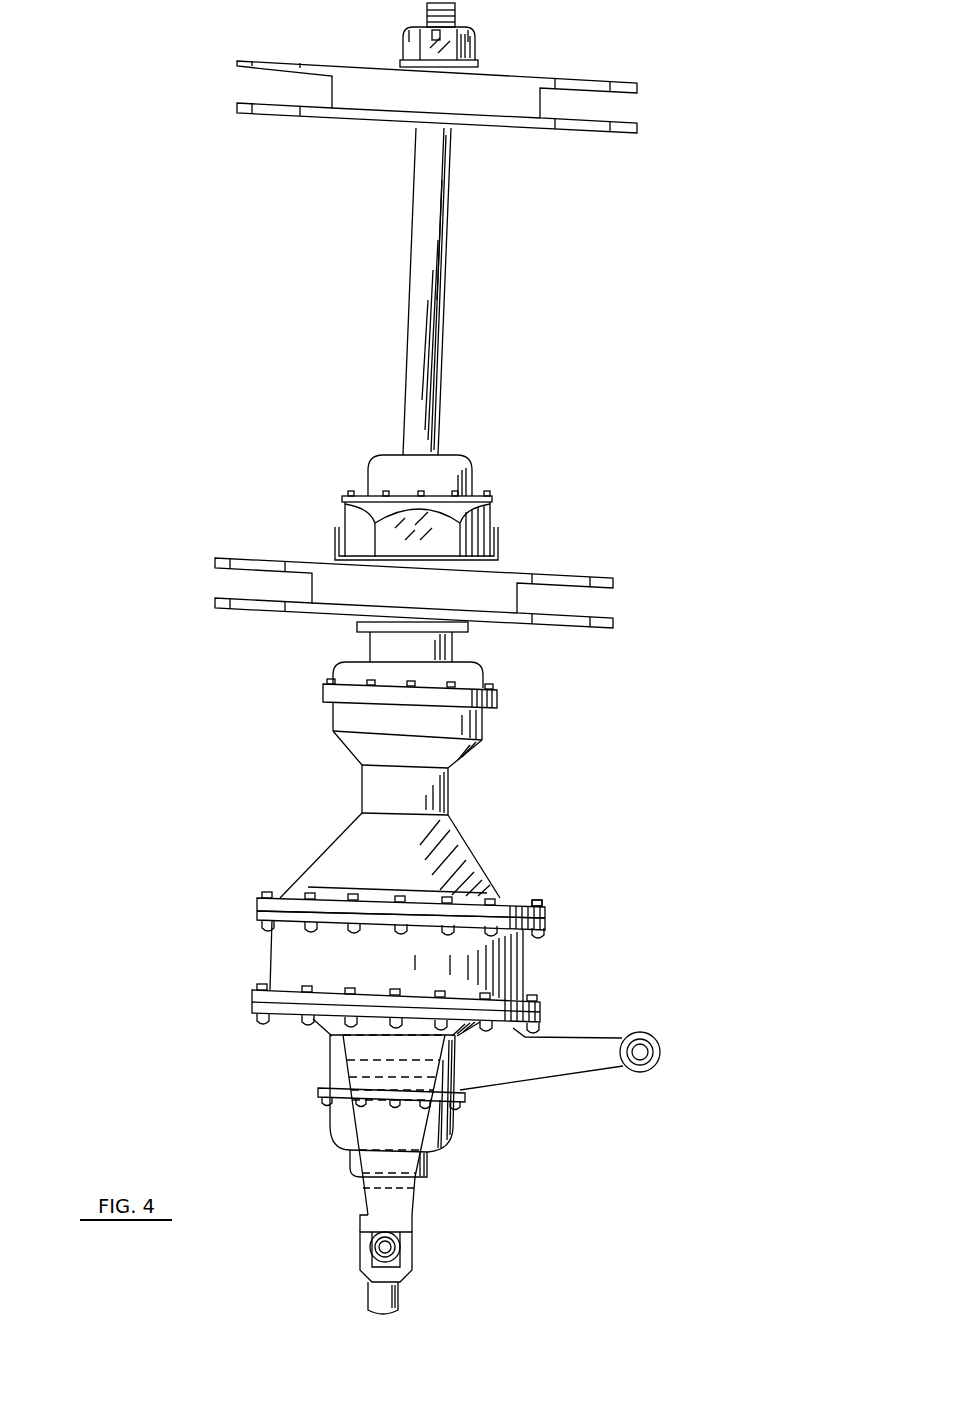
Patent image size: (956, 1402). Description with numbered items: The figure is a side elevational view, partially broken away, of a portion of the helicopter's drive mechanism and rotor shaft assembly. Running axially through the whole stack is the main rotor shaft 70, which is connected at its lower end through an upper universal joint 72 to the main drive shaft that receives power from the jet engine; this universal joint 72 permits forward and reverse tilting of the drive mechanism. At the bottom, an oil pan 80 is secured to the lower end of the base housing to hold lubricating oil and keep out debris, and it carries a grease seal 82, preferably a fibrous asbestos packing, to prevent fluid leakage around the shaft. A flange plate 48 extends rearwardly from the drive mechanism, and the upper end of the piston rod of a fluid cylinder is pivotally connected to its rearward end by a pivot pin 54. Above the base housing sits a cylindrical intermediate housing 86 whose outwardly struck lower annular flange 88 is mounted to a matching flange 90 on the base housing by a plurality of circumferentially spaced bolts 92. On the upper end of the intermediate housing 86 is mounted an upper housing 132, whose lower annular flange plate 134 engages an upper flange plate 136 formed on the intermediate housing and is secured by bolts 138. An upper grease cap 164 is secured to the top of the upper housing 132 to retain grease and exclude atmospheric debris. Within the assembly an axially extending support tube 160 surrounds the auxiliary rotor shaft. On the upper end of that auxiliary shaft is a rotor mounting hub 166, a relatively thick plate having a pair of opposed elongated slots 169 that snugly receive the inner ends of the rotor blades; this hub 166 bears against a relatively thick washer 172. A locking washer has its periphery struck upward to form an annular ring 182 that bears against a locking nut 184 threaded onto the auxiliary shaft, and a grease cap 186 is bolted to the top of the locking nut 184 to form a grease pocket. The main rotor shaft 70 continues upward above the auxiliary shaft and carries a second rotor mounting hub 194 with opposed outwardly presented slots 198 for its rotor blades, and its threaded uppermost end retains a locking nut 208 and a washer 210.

The flange plate 48 is at (528, 1078).
The pivot pin 54 is at (660, 1043).
The main rotor shaft 70 is at (430, 327).
The universal joint 72 is at (412, 1258).
The oil pan 80 is at (443, 1128).
The grease seal 82 is at (430, 1158).
The cylindrical intermediate housing 86 is at (278, 950).
The lower annular flange 88 is at (543, 1005).
The matching flange 90 is at (543, 1015).
The bolts 92 is at (528, 1000).
The upper housing 132 is at (437, 837).
The lower annular flange plate 134 is at (545, 915).
The upper flange plate 136 is at (547, 925).
The bolts 138 is at (537, 905).
The support tube 160 is at (370, 647).
The upper grease cap 164 is at (470, 684).
The rotor mounting hub 166 is at (483, 602).
The elongated slots 169 is at (587, 608).
The washer 172 is at (360, 622).
The annular ring 182 is at (500, 548).
The locking nut 184 is at (493, 513).
The grease cap 186 is at (453, 467).
The rotor mounting hub 194 is at (482, 129).
The slots 198 is at (603, 105).
The locking nut 208 is at (473, 43).
The washer 210 is at (427, 67).